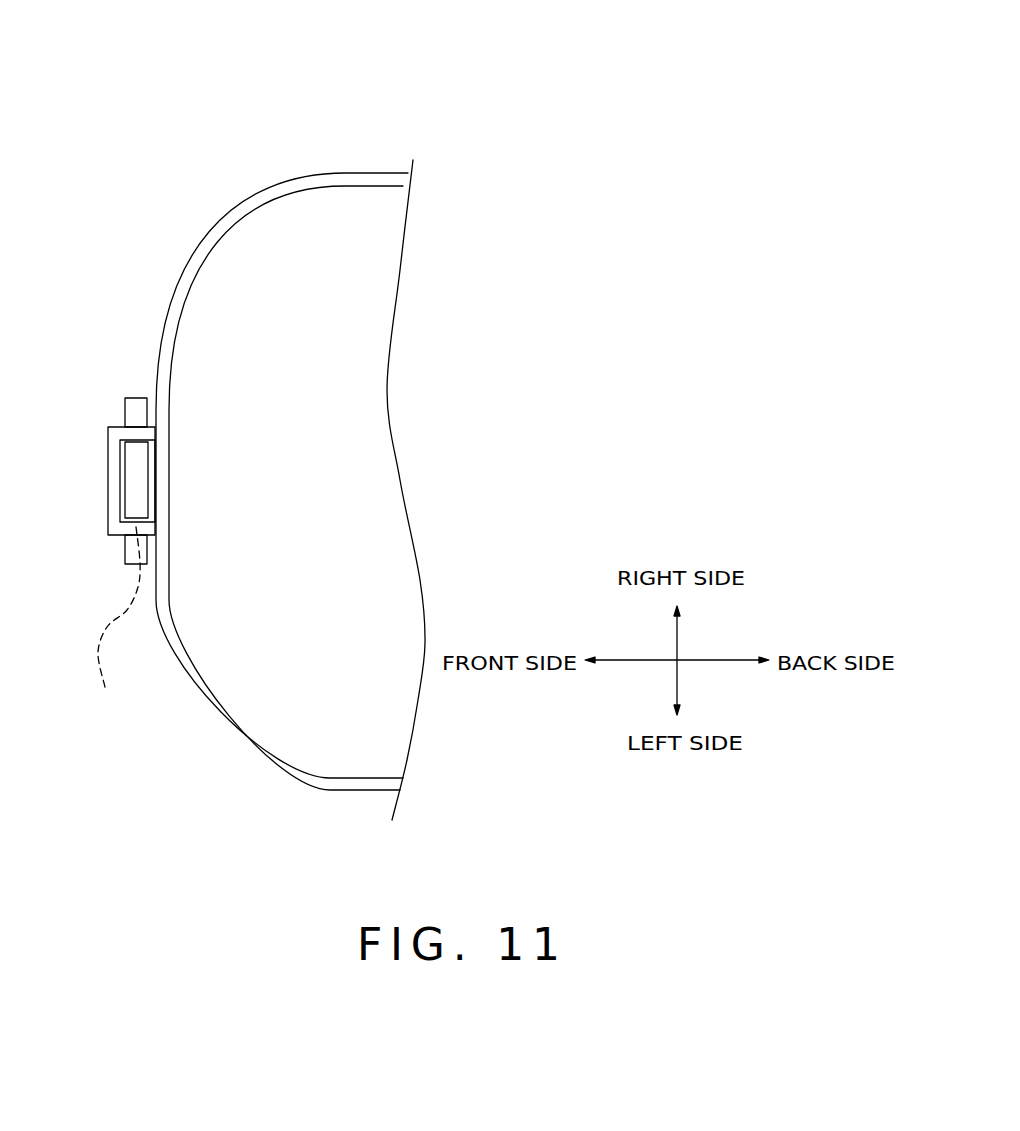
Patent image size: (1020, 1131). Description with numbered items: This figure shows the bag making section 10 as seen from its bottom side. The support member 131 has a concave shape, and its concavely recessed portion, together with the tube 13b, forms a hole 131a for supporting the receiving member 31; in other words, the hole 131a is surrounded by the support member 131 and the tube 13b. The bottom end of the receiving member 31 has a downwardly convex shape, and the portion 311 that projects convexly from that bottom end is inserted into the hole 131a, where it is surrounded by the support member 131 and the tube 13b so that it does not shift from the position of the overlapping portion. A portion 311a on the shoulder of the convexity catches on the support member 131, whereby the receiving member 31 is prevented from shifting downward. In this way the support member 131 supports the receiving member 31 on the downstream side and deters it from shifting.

The bag making section 10 is at (290, 411).
The tube 13b is at (162, 364).
The receiving member 31 is at (170, 498).
The support member 131 is at (174, 513).
The hole 131a is at (150, 463).
The portion 311 is at (140, 488).
The portion 311a is at (116, 625).